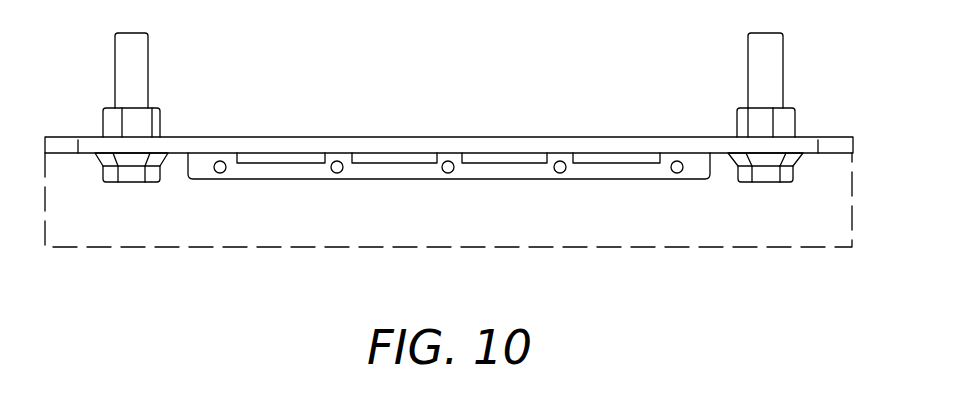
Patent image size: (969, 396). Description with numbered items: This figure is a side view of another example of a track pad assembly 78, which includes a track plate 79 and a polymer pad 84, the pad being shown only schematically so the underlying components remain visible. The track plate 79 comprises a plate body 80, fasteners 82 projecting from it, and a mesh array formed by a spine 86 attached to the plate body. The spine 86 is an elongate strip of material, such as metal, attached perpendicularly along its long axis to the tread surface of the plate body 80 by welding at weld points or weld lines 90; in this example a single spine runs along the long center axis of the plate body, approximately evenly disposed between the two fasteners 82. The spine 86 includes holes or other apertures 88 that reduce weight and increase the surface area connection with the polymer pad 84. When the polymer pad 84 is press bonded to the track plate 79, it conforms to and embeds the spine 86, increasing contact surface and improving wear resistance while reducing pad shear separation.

The track pad assembly 78 is at (856, 109).
The track plate 79 is at (809, 94).
The plate body 80 is at (93, 136).
The fasteners 82 is at (166, 58).
The polymer pad 84 is at (853, 189).
The spine 86 is at (637, 181).
The holes or apertures 88 is at (681, 176).
The weld points or weld lines 90 is at (613, 158).